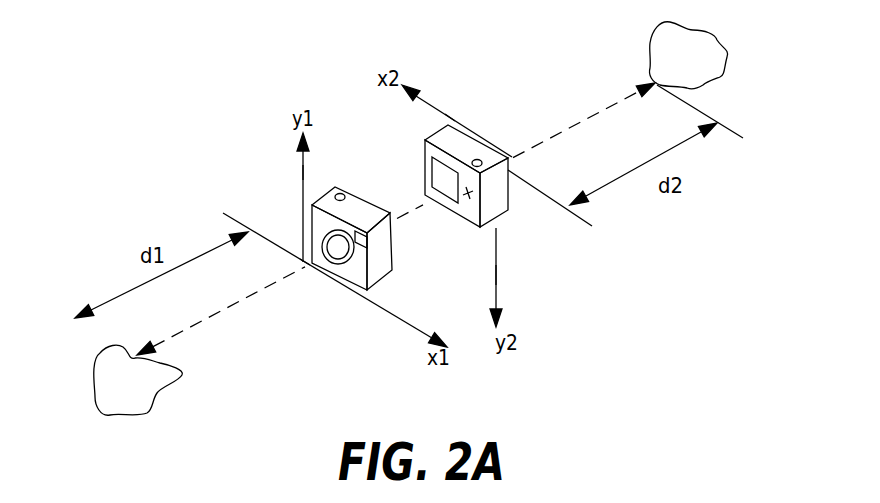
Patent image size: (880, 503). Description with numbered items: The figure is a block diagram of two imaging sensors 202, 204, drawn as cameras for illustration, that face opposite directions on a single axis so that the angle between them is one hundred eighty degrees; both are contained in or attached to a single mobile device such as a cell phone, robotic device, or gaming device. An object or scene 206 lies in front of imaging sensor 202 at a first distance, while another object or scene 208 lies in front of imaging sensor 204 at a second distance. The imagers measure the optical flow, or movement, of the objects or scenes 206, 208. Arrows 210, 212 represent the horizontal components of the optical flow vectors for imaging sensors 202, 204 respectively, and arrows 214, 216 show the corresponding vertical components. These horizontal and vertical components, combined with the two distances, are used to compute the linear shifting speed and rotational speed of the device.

The imaging sensor 202 is at (357, 205).
The imaging sensor 204 is at (442, 137).
The object or scene 206 is at (138, 380).
The object or scene 208 is at (688, 55).
The arrow 210 is at (393, 318).
The arrow 212 is at (450, 110).
The arrow 214 is at (300, 172).
The arrow 216 is at (497, 275).